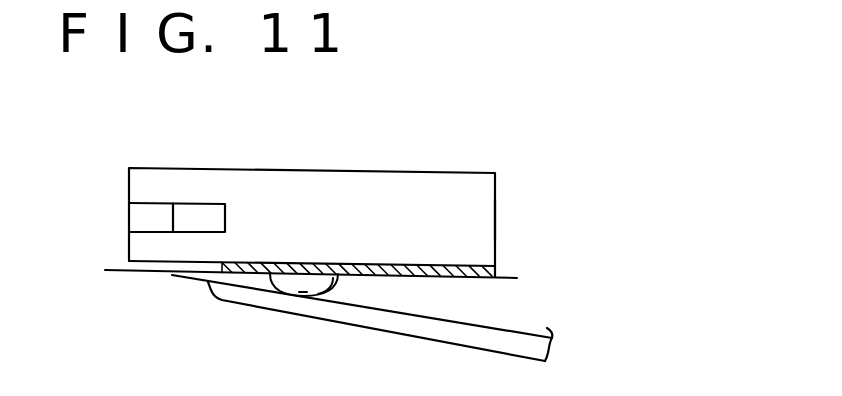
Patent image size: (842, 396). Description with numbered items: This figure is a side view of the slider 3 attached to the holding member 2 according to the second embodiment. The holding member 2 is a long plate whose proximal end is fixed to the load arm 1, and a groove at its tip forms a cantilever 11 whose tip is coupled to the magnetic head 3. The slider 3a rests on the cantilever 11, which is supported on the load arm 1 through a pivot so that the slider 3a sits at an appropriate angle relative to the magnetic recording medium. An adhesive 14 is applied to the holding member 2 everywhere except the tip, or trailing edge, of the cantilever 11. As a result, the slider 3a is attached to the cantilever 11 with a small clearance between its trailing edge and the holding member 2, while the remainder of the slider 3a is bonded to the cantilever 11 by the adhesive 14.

The load arm 1 is at (512, 344).
The holding member 2 is at (185, 277).
The magnetic head 3 is at (345, 160).
The slider 3a is at (477, 217).
The cantilever 11 is at (368, 276).
The adhesive 14 is at (470, 271).